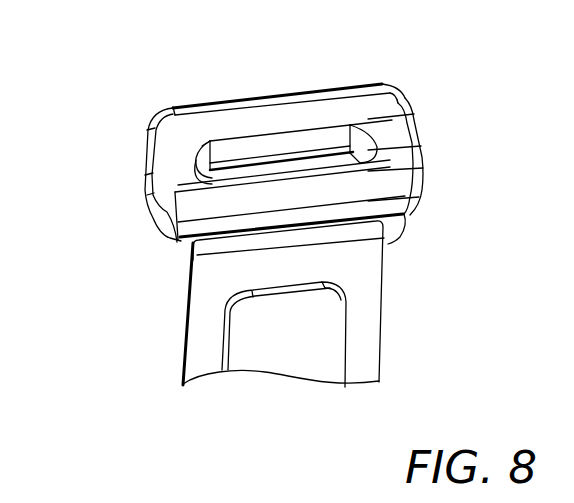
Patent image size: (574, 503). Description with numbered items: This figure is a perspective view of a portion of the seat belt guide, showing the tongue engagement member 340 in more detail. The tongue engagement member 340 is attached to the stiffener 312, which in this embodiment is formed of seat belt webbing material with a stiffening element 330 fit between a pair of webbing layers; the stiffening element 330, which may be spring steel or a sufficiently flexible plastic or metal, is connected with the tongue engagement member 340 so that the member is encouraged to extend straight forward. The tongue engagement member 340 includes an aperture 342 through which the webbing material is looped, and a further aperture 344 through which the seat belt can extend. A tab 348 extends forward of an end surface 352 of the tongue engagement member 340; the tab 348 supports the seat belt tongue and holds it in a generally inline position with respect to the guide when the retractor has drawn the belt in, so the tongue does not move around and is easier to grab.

The stiffener 312 is at (366, 312).
The stiffening element 330 is at (205, 325).
The tongue engagement member 340 is at (157, 112).
The aperture 342 is at (247, 223).
The aperture 344 is at (214, 148).
The tab 348 is at (282, 120).
The end surface 352 is at (397, 137).